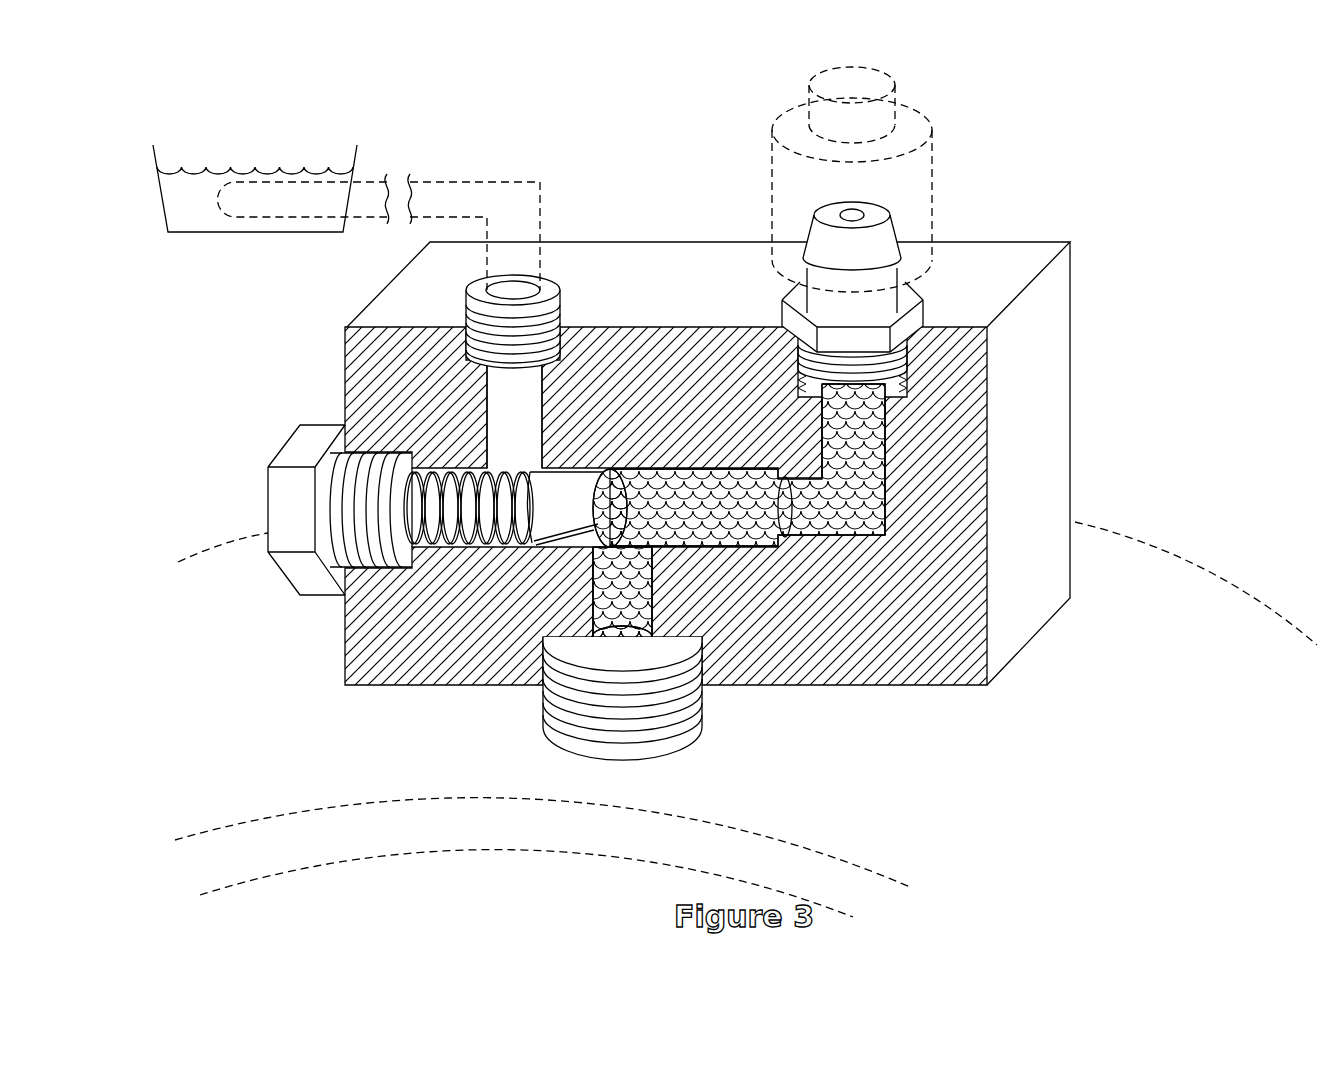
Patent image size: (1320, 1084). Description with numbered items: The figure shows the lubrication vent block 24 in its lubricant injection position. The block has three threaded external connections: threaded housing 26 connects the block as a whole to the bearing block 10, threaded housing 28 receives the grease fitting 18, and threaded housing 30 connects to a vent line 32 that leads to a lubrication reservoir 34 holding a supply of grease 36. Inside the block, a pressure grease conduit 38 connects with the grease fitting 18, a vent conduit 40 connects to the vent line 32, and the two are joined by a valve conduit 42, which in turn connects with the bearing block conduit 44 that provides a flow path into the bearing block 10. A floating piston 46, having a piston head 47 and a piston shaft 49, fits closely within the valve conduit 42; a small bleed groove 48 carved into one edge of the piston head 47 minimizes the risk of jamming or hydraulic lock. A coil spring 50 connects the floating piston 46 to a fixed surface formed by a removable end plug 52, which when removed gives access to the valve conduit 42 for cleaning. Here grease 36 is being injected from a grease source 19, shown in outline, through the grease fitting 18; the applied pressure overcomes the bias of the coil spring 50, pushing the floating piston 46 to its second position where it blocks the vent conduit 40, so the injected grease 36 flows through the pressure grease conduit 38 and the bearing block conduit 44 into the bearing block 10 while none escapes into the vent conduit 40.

The bearing block 10 is at (1157, 522).
The grease fitting 18 is at (885, 248).
The grease source 19 is at (933, 160).
The lubrication vent block 24 is at (703, 217).
The threaded housing 26 is at (690, 742).
The threaded housing 28 is at (905, 348).
The threaded housing 30 is at (560, 287).
The vent line 32 is at (530, 196).
The lubrication reservoir 34 is at (243, 233).
The grease 36 is at (863, 455).
The pressure grease conduit 38 is at (882, 422).
The vent conduit 40 is at (498, 407).
The valve conduit 42 is at (743, 535).
The bearing block conduit 44 is at (645, 603).
The floating piston 46 is at (479, 625).
The piston head 47 is at (553, 518).
The bleed groove 48 is at (572, 532).
The piston shaft 49 is at (497, 512).
The coil spring 50 is at (440, 545).
The removable end plug 52 is at (298, 570).